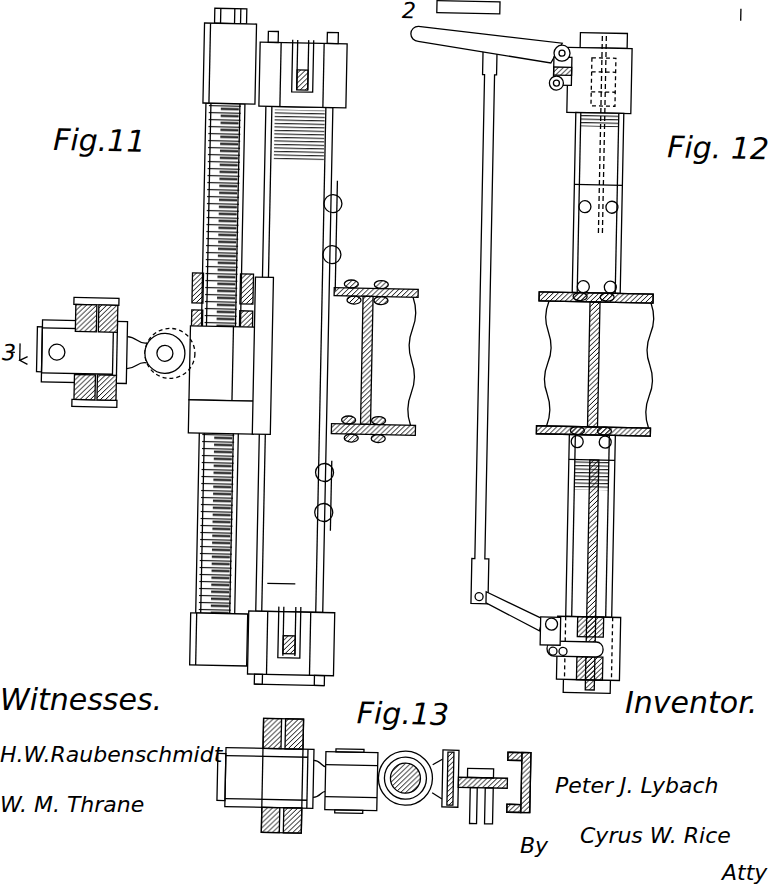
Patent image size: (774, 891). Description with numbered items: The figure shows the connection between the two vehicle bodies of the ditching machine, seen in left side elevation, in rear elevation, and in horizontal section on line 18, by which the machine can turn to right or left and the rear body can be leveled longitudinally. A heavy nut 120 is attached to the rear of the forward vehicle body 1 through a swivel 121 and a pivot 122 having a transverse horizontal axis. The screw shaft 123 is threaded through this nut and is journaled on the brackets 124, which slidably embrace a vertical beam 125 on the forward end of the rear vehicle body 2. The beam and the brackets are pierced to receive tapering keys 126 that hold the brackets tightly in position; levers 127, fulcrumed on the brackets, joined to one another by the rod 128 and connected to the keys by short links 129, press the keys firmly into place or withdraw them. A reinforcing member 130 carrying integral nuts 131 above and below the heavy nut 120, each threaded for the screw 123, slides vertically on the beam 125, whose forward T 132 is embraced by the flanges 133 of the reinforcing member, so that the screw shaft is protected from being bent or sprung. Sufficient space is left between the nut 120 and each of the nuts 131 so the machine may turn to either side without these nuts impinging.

In FIG. 11, the forward vehicle body 1 is at (108, 401).
In FIG. 13, the forward vehicle body 1 is at (280, 833).
In FIG. 11, the rear vehicle body 2 is at (374, 362).
In FIG. 12, the rear vehicle body 2 is at (635, 355).
In FIG. 11, the section line 18 is at (315, 365).
In FIG. 11, the heavy nut 120 is at (200, 369).
In FIG. 13, the heavy nut 120 is at (331, 750).
In FIG. 11, the swivel 121 is at (63, 387).
In FIG. 13, the swivel 121 is at (291, 770).
In FIG. 11, the pivot 122 is at (165, 360).
In FIG. 13, the pivot 122 is at (380, 764).
In FIG. 11, the screw shaft 123 is at (212, 552).
In FIG. 12, the screw shaft 123 is at (592, 575).
In FIG. 13, the screw shaft 123 is at (414, 795).
In FIG. 11, the brackets 124 is at (209, 77).
In FIG. 12, the brackets 124 is at (628, 91).
In FIG. 13, the brackets 124 is at (521, 808).
In FIG. 11, the vertical beam 125 is at (311, 235).
In FIG. 12, the vertical beam 125 is at (613, 161).
In FIG. 11, the tapering keys 126 is at (302, 77).
In FIG. 12, the tapering keys 126 is at (599, 642).
In FIG. 12, the levers 127 is at (560, 88).
In FIG. 12, the rod 128 is at (466, 321).
In FIG. 12, the short links 129 is at (553, 657).
In FIG. 11, the reinforcing member 130 is at (228, 417).
In FIG. 11, the integral nuts 131 is at (282, 445).
In FIG. 13, the integral nuts 131 is at (448, 759).
In FIG. 11, the forward T 132 is at (300, 584).
In FIG. 13, the forward T 132 is at (548, 725).
In FIG. 11, the flanges 133 is at (268, 338).
In FIG. 13, the flanges 133 is at (463, 765).